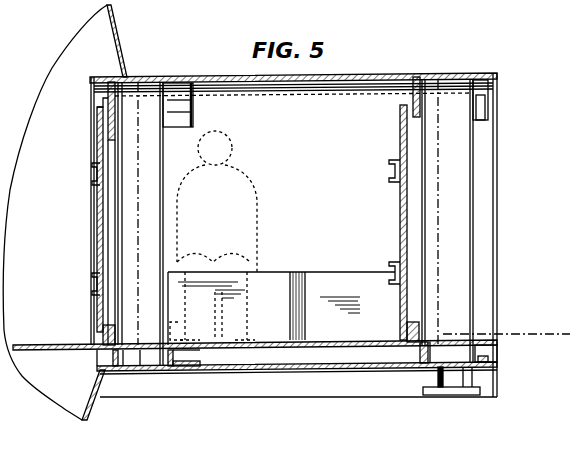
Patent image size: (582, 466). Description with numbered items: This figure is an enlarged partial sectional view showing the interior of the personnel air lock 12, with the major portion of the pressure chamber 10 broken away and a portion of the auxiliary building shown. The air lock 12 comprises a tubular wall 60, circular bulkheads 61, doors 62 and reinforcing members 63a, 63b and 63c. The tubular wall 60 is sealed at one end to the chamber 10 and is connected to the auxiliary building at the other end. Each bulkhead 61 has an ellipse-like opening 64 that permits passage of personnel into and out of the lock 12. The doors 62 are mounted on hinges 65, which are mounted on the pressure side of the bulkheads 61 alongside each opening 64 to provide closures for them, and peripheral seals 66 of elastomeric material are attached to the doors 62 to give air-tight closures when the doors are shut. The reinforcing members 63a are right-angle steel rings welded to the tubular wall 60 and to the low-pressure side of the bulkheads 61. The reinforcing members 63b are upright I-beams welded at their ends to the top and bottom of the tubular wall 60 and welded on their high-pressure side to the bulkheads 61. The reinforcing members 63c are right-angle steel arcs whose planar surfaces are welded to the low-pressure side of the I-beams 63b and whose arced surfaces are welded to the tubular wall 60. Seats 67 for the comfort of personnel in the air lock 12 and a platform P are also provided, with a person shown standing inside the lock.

The chamber 10 is at (122, 54).
The personnel air lock 12 is at (376, 68).
The tubular wall 60 is at (208, 76).
The circular bulkheads 61 is at (106, 98).
The doors 62 is at (97, 219).
The reinforcing members 63a is at (138, 362).
The reinforcing members 63b is at (172, 356).
The reinforcing members 63c is at (186, 112).
The ellipse-like openings 64 is at (124, 334).
The hinges 65 is at (92, 178).
The peripheral seals 66 is at (104, 332).
The seats 67 is at (332, 272).
The platform P is at (40, 345).